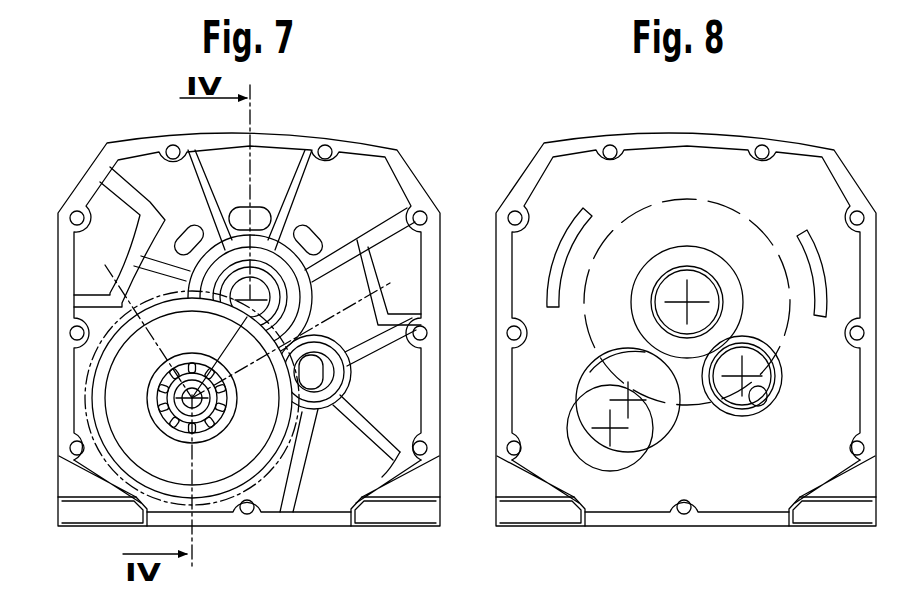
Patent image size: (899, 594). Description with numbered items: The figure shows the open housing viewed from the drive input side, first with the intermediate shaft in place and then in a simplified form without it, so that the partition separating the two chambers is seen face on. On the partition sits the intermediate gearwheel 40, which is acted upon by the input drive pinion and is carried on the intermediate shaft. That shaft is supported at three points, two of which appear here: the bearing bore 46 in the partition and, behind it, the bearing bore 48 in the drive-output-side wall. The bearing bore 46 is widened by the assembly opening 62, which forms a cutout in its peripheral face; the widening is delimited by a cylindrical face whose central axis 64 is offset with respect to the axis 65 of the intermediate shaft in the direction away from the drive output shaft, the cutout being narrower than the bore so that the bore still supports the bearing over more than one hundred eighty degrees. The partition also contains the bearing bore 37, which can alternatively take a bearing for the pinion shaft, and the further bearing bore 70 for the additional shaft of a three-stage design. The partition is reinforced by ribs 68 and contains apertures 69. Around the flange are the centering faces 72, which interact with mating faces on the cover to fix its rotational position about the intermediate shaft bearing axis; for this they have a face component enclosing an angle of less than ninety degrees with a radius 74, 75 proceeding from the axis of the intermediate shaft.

In FIG. 8, the bearing bore 37 is at (697, 285).
In FIG. 7, the intermediate gearwheel 40 is at (210, 470).
In FIG. 8, the bearing bore 46 is at (655, 445).
In FIG. 8, the bearing bore 48 is at (623, 440).
In FIG. 8, the assembly opening 62 is at (580, 450).
In FIG. 8, the central axis 64 is at (600, 470).
In FIG. 8, the axis of the intermediate shaft 65 is at (577, 410).
In FIG. 7, the ribs 68 is at (390, 450).
In FIG. 7, the apertures 69 is at (306, 240).
In FIG. 8, the bearing bore 70 is at (745, 410).
In FIG. 7, the centering faces 72 is at (160, 217).
In FIG. 8, the centering faces 72 is at (592, 236).
In FIG. 7, the radius 74 is at (130, 357).
In FIG. 7, the radius 75 is at (335, 345).